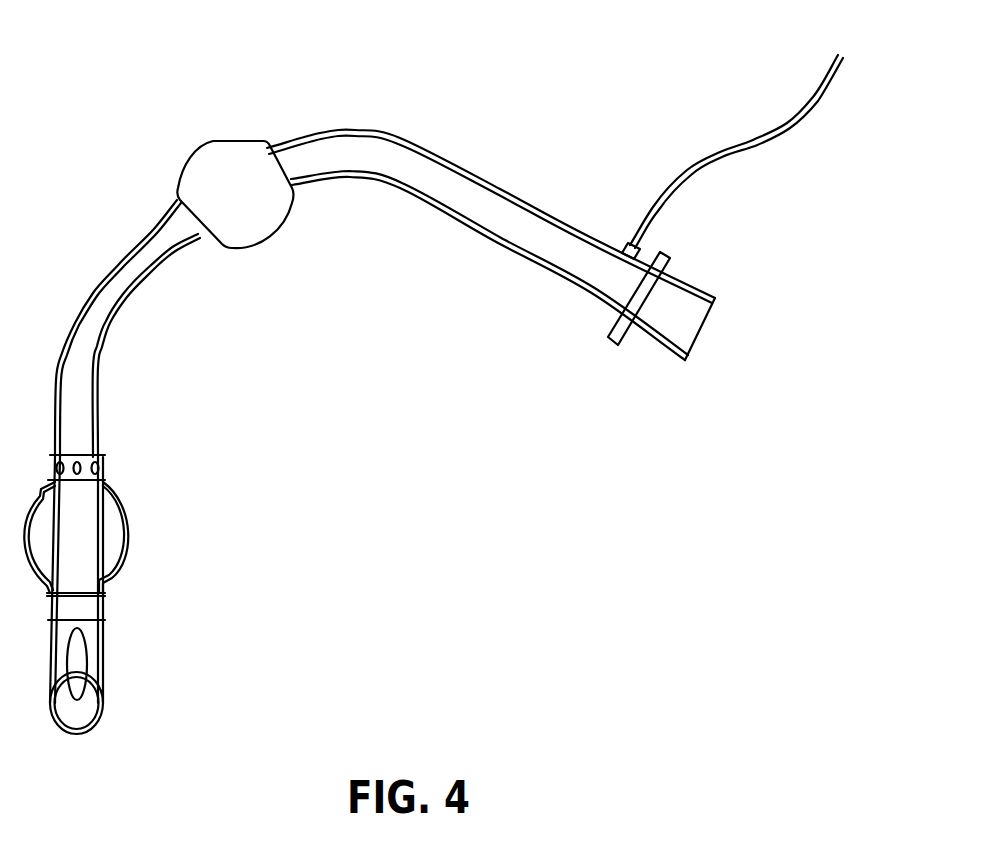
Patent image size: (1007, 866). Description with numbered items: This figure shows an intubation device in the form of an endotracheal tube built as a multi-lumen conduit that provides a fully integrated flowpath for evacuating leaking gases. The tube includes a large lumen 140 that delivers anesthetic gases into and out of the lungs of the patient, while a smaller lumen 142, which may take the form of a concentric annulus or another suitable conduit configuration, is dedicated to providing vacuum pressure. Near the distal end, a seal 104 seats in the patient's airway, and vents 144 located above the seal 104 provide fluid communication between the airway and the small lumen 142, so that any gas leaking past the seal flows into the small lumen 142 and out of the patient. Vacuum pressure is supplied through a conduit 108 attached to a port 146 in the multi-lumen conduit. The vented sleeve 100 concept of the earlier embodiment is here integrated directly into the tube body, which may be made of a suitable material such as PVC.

The vented sleeve 100 is at (219, 140).
The seal 104 is at (128, 530).
The conduit 108 is at (722, 155).
The large lumen 140 is at (381, 408).
The smaller lumen 142 is at (527, 203).
The vents 144 is at (60, 462).
The port 146 is at (625, 250).